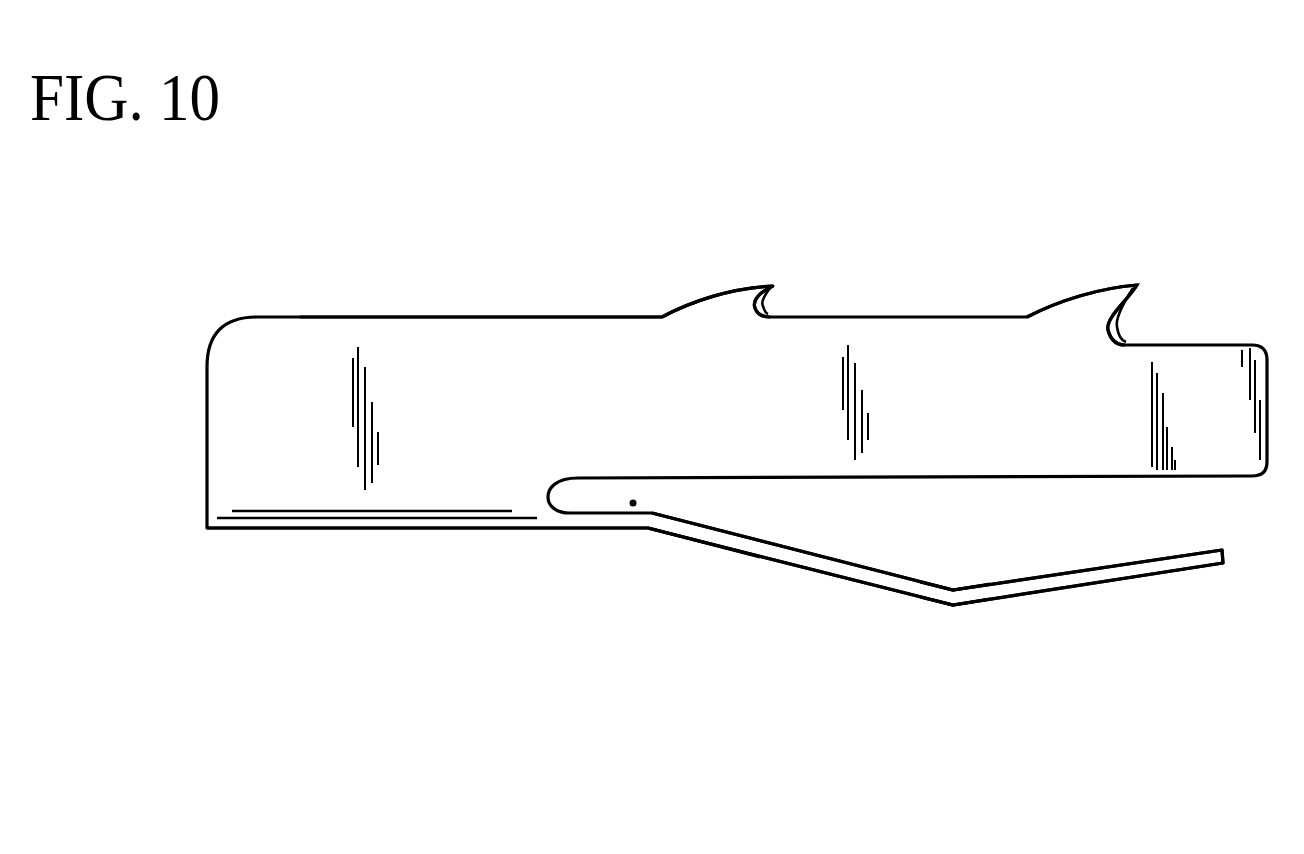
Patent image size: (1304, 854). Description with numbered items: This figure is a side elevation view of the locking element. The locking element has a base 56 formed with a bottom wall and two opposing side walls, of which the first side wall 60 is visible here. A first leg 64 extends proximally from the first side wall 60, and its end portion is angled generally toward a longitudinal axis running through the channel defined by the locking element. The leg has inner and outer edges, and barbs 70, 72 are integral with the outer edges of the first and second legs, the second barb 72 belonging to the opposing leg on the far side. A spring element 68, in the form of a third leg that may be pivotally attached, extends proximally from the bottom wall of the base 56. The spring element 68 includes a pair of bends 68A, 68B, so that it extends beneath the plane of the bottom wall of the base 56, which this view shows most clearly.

The base 56 is at (302, 530).
The first side wall 60 is at (355, 332).
The first leg 64 is at (565, 367).
The spring element 68 is at (823, 572).
The first bend 68A is at (648, 528).
The second bend 68B is at (954, 606).
The first barb 70 is at (760, 283).
The second barb 72 is at (1094, 290).